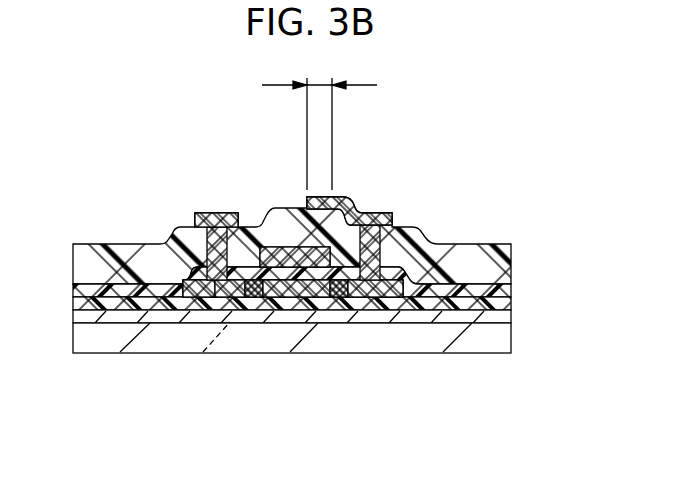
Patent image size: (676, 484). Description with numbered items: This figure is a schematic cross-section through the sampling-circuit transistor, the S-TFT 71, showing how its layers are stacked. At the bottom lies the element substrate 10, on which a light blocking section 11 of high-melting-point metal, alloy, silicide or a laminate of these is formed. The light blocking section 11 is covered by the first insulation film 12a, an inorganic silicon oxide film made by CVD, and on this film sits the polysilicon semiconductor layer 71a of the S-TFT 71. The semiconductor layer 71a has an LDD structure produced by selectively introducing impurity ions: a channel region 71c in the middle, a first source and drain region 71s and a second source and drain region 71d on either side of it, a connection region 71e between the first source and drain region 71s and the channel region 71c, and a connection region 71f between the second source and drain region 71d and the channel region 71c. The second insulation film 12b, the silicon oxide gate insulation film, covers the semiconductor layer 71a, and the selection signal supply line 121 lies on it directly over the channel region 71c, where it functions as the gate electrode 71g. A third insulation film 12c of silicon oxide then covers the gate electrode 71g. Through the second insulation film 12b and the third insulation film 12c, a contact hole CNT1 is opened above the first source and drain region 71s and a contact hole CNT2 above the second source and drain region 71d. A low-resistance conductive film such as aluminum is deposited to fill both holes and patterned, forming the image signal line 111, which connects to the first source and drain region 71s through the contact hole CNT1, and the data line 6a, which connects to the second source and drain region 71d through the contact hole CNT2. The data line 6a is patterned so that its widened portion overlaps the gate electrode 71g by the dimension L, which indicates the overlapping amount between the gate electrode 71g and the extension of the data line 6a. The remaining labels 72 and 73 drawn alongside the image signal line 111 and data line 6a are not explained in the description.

The element substrate 10 is at (505, 337).
The light blocking section 11 is at (503, 315).
The first insulation film 12a is at (505, 302).
The second insulation film 12b is at (503, 288).
The third insulation film 12c is at (500, 258).
The S-TFT 71 is at (375, 316).
The semiconductor layer 71a is at (190, 288).
The first source and drain region 71s is at (210, 290).
The connection region 71e is at (253, 290).
The channel region 71c is at (288, 288).
The connection region 71f is at (342, 290).
The second source and drain region 71d is at (393, 290).
The gate electrode 71g is at (272, 199).
The selection signal supply line 121 is at (270, 247).
The image signal line 111 is at (203, 213).
The source electrode 72 is at (190, 193).
The data line 6a is at (375, 212).
The gate electrode 73 is at (362, 185).
The contact hole CNT1 is at (205, 243).
The contact hole CNT2 is at (380, 250).
The dimension L is at (319, 123).